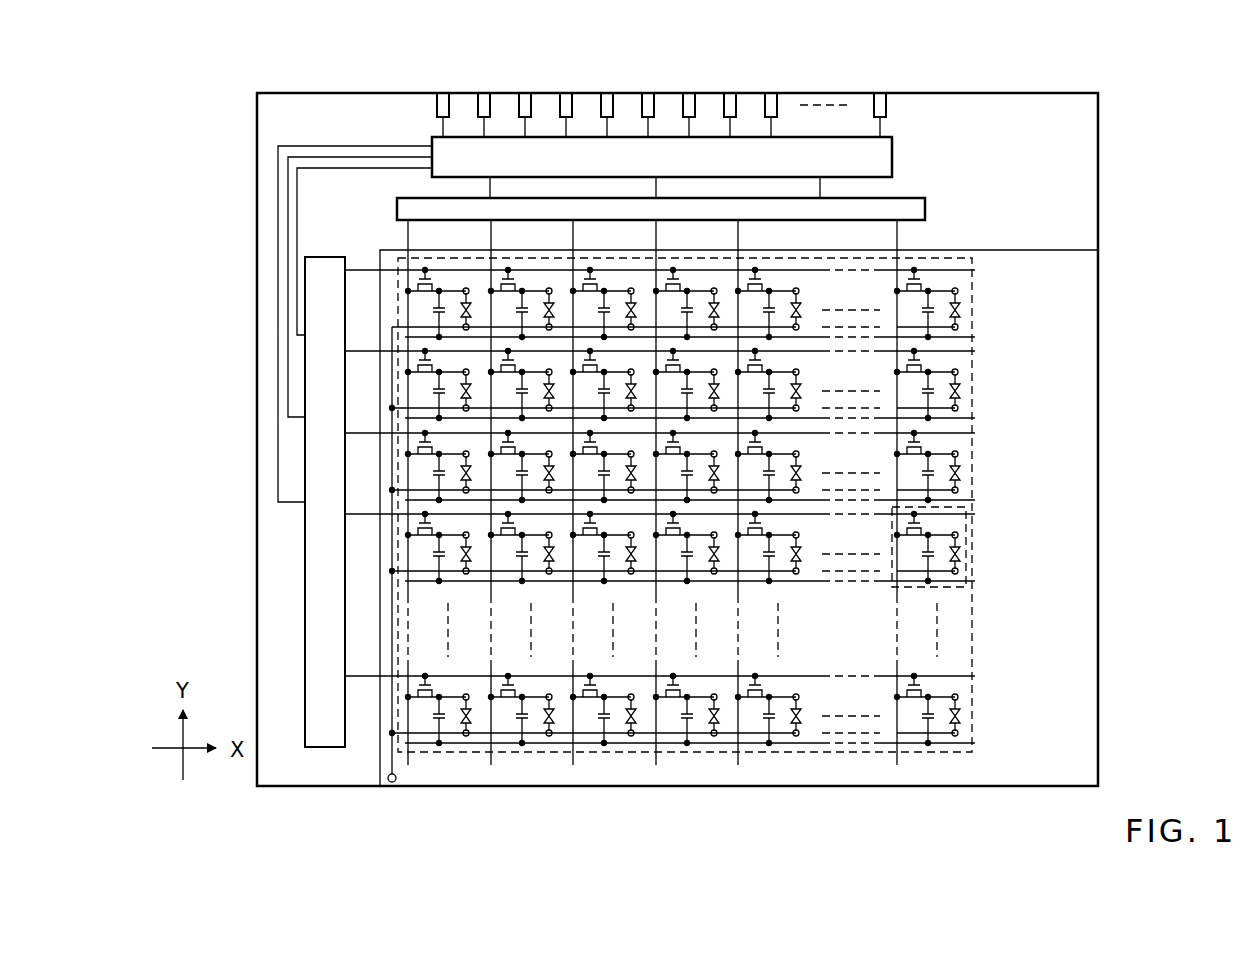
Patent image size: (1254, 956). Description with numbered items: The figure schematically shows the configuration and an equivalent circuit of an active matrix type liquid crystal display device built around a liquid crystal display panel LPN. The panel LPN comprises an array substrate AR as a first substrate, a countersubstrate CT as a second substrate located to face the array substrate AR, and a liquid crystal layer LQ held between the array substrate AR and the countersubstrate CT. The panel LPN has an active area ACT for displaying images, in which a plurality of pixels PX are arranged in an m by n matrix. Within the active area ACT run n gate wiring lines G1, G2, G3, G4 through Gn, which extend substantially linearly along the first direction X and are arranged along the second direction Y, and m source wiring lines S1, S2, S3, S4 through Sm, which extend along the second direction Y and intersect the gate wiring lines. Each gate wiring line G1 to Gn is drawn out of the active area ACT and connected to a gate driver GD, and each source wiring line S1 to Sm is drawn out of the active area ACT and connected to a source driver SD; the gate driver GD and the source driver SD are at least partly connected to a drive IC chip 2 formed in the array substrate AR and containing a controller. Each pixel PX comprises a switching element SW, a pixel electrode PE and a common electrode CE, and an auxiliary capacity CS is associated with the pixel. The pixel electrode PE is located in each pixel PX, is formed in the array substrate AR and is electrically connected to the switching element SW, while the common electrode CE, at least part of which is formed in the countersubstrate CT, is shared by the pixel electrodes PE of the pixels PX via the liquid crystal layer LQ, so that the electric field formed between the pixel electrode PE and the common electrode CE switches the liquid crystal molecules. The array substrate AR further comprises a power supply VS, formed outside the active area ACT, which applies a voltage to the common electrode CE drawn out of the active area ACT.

The liquid crystal display panel LPN is at (1133, 107).
The drive IC chip 2 is at (892, 137).
The source driver SD is at (927, 207).
The countersubstrate CT is at (1070, 250).
The gate driver GD is at (305, 613).
The gate wiring line G1 is at (361, 268).
The gate wiring line G2 is at (361, 349).
The gate wiring line G3 is at (361, 431).
The gate wiring line G4 is at (361, 512).
The gate wiring line Gn is at (363, 674).
The source wiring line S1 is at (411, 238).
The source wiring line S2 is at (494, 238).
The source wiring line S3 is at (576, 238).
The source wiring line S4 is at (659, 238).
The source wiring line Sm is at (900, 238).
The active area ACT is at (779, 505).
The pixel PX is at (946, 553).
The switching element SW is at (890, 526).
The auxiliary capacity CS is at (918, 558).
The pixel electrode PE is at (958, 534).
The liquid crystal layer LQ is at (961, 553).
The common electrode CE is at (959, 571).
The power supply VS is at (395, 782).
The array substrate AR is at (323, 777).